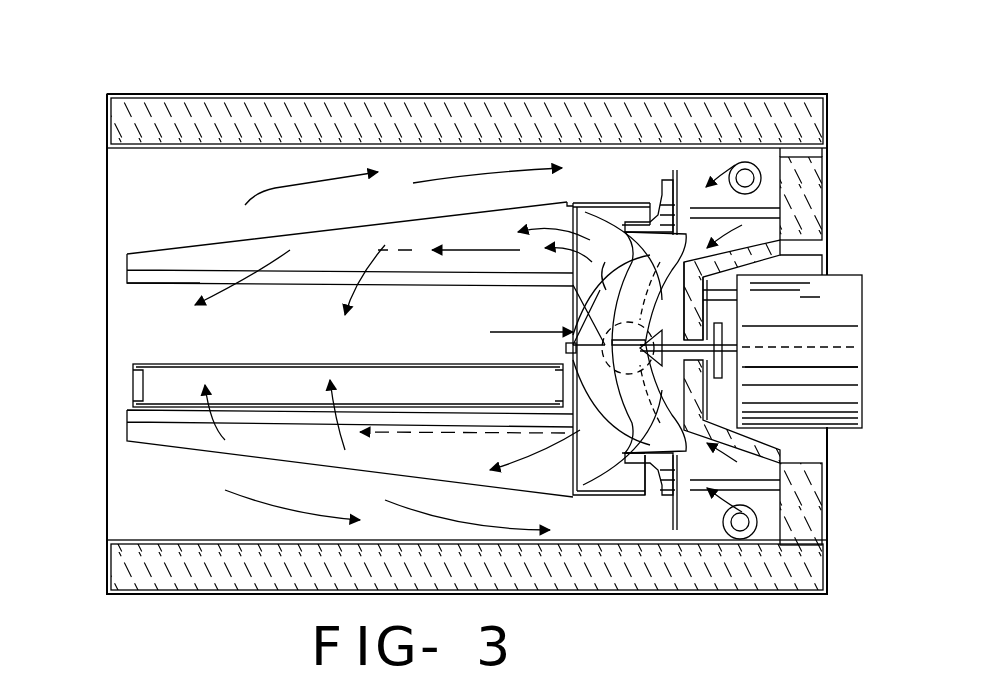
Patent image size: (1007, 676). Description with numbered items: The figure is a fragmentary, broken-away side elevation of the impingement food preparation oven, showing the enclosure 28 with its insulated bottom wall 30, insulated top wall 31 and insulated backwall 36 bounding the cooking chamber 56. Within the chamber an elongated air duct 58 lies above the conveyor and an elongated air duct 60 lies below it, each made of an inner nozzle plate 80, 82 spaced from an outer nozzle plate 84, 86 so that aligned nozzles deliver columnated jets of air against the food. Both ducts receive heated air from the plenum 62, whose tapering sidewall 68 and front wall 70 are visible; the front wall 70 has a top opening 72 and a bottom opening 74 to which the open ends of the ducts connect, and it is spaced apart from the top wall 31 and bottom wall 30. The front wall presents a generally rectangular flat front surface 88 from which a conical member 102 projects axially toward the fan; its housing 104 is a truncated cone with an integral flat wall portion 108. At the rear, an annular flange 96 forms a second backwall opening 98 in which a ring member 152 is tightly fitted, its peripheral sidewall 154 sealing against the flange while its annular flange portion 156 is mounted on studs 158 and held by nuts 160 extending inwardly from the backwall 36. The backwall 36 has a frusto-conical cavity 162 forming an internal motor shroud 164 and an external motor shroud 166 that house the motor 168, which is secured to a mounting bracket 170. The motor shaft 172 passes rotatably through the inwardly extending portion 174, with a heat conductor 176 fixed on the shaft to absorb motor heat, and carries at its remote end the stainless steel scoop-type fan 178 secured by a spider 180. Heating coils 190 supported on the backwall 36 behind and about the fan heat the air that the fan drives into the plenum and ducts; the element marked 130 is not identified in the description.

The enclosure 28 is at (107, 118).
The insulated bottom wall 30 is at (163, 594).
The insulated top wall 31 is at (330, 94).
The insulated backwall 36 is at (827, 182).
The cooking chamber 56 is at (268, 337).
The elongated air duct 58 is at (172, 256).
The elongated air duct 60 is at (185, 440).
The plenum 62 is at (592, 222).
The tapering sidewall 68 is at (580, 497).
The front wall 70 is at (566, 202).
The top opening 72 is at (572, 270).
The bottom opening 74 is at (570, 486).
The inner nozzle plate 80 is at (290, 262).
The inner nozzle plate 82 is at (290, 440).
The outer nozzle plate 84 is at (160, 286).
The outer nozzle plate 86 is at (282, 450).
The flat front surface 88 is at (637, 348).
The annular flange 96 is at (652, 218).
The second backwall opening 98 is at (620, 215).
The conical member 102 is at (490, 320).
The housing 104 is at (765, 294).
The flat wall portion 108 is at (560, 335).
The fastener 130 is at (566, 348).
The ring member 152 is at (652, 535).
The peripheral sidewall 154 is at (660, 175).
The annular flange portion 156 is at (680, 185).
The stud 158 is at (760, 215).
The nut 160 is at (667, 168).
The cavity 162 is at (827, 258).
The internal motor shroud 164 is at (742, 540).
The external motor shroud 166 is at (770, 452).
The motor 168 is at (848, 338).
The mounting bracket 170 is at (827, 272).
The motor shaft 172 is at (724, 340).
The inwardly extending portion 174 is at (703, 300).
The heat conductor 176 is at (760, 362).
The scoop-type fan 178 is at (703, 392).
The spider 180 is at (628, 355).
The heating coil 190 is at (752, 165).